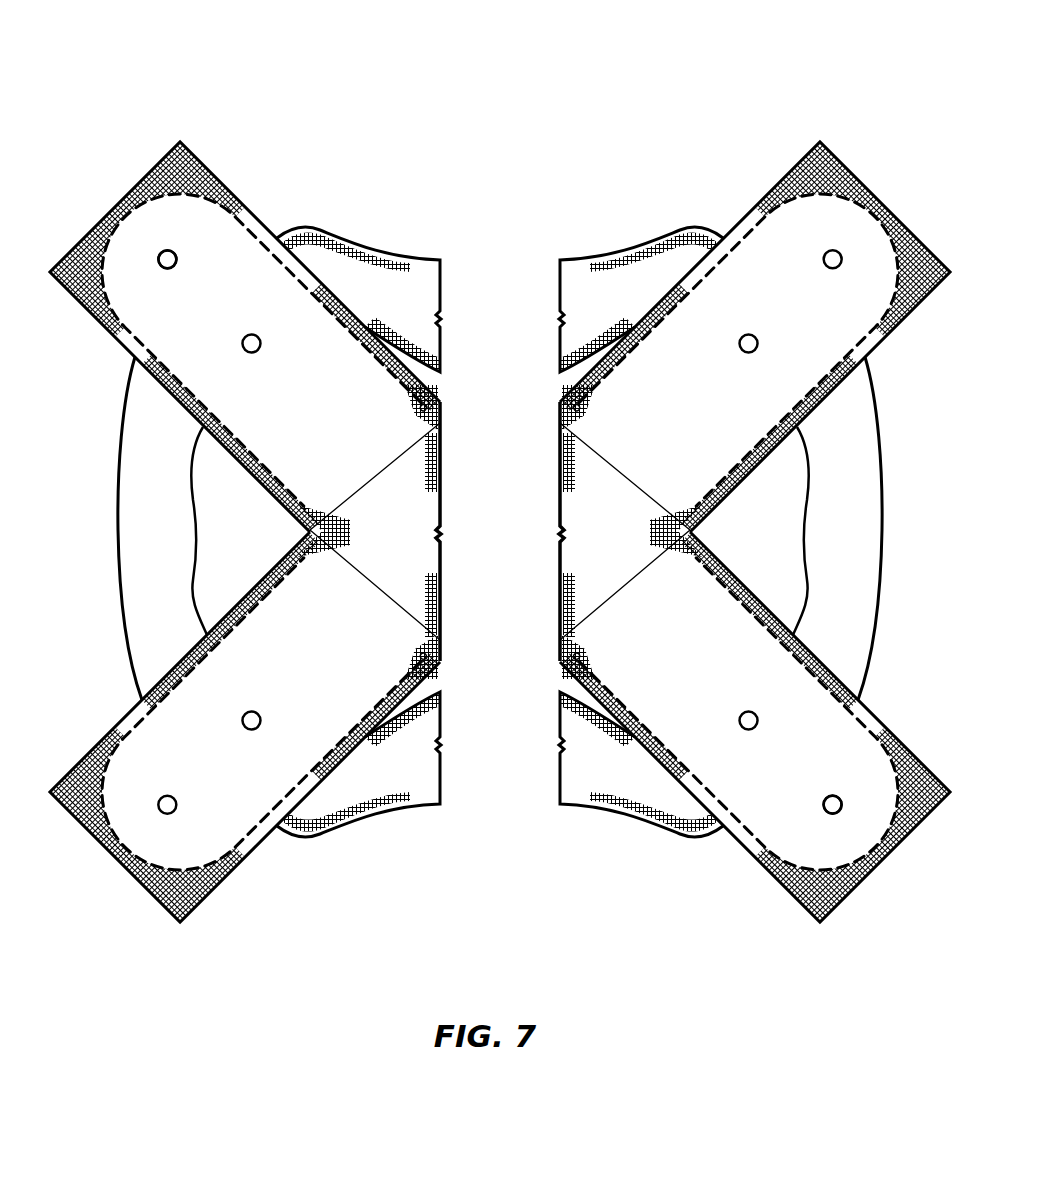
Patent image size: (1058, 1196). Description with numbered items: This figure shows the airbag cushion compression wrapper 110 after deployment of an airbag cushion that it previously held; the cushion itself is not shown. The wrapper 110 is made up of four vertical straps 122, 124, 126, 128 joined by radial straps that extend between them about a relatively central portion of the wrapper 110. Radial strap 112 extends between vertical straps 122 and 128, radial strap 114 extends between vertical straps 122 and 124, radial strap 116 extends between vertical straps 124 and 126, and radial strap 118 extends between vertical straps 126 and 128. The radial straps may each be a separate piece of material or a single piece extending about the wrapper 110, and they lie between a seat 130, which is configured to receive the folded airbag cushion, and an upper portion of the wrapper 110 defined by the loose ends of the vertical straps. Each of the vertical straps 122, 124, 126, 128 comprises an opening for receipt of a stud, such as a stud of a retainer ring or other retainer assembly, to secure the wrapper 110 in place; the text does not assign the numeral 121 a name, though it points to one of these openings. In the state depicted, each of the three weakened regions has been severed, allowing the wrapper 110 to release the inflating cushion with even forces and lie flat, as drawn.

The compression wrapper 110 is at (677, 125).
The radial strap 112 is at (848, 537).
The radial strap 114 is at (372, 270).
The radial strap 116 is at (135, 522).
The radial strap 118 is at (412, 793).
The hole 121 is at (175, 255).
The vertical strap 122 is at (903, 225).
The vertical strap 124 is at (137, 186).
The vertical strap 126 is at (177, 892).
The vertical strap 128 is at (823, 893).
The seat 130 is at (410, 505).